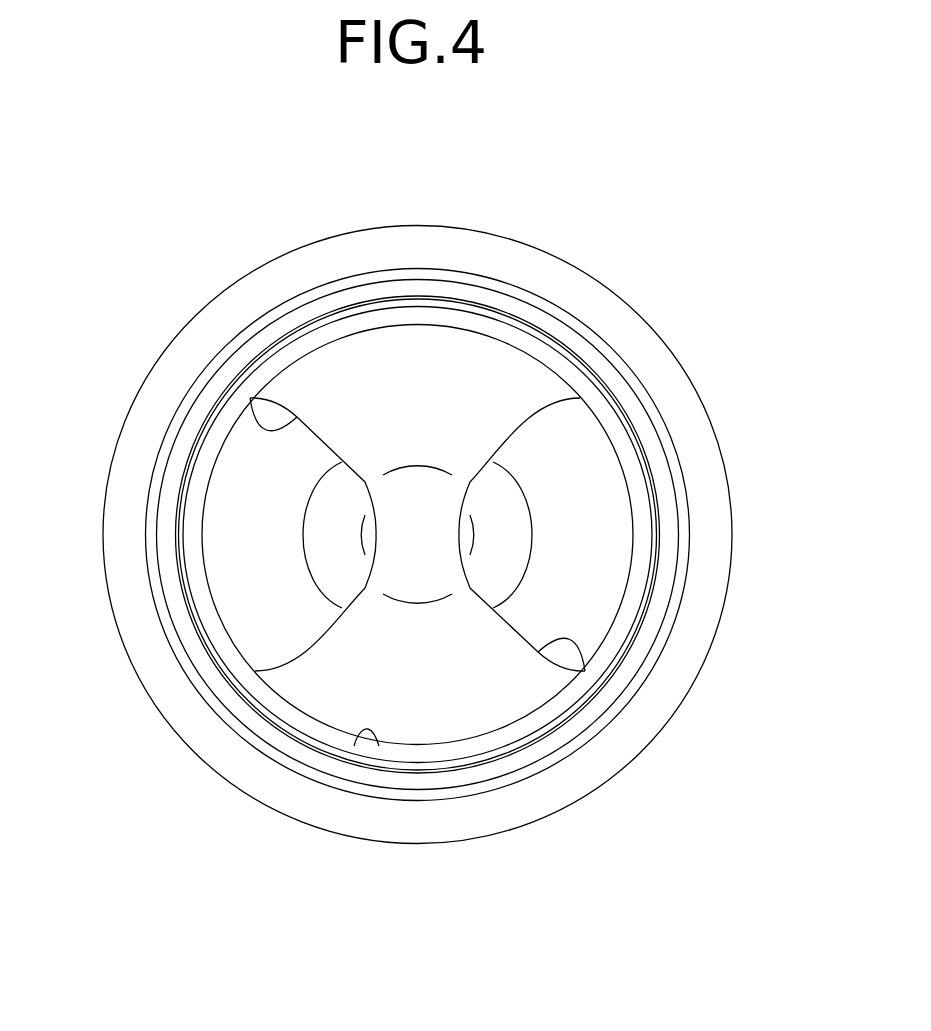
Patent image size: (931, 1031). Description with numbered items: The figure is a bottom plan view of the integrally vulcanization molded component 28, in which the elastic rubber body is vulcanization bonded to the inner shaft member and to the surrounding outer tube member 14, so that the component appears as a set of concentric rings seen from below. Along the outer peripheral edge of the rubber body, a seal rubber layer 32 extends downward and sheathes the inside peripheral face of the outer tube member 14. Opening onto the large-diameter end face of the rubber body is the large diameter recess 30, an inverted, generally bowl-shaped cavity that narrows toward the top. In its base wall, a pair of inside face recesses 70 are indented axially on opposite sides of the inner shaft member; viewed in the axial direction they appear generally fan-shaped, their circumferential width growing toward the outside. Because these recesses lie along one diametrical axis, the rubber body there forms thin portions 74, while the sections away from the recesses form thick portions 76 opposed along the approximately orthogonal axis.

The outer tube member 14 is at (482, 278).
The integrally vulcanization molded component 28 is at (672, 308).
The large diameter recess 30 is at (357, 740).
The seal rubber layer 32 is at (253, 723).
The inside face recesses 70 is at (262, 431).
The thin portions 74 is at (578, 492).
The thick portions 76 is at (353, 360).